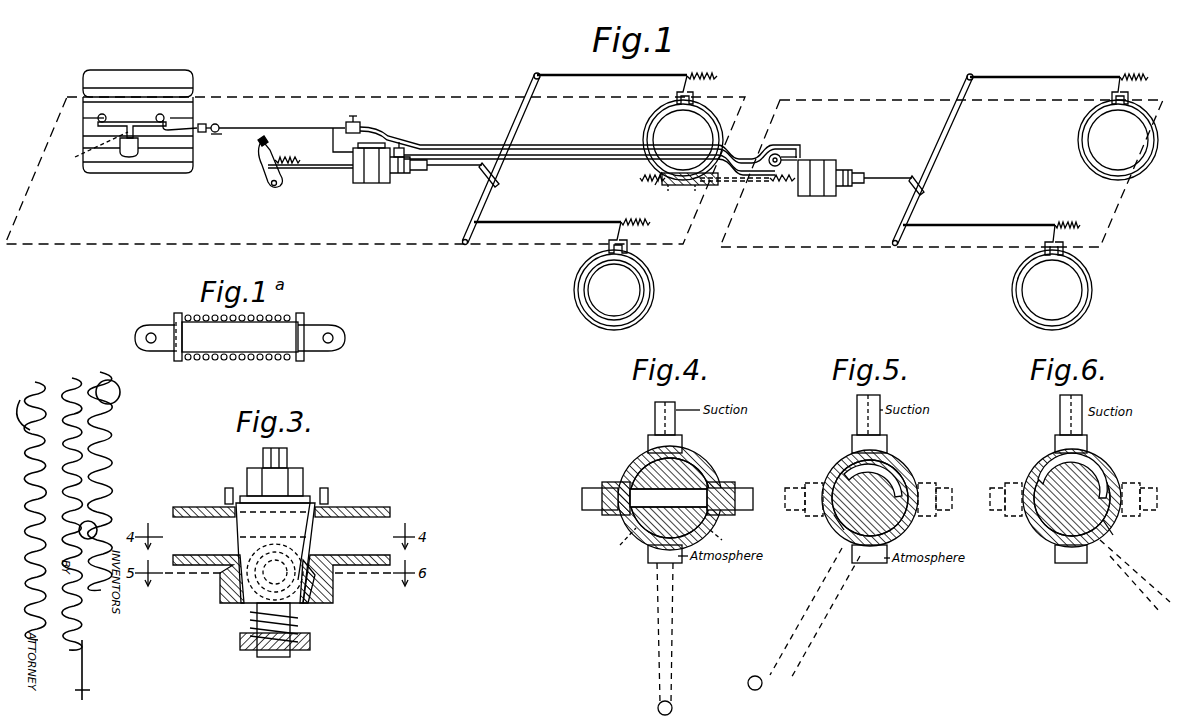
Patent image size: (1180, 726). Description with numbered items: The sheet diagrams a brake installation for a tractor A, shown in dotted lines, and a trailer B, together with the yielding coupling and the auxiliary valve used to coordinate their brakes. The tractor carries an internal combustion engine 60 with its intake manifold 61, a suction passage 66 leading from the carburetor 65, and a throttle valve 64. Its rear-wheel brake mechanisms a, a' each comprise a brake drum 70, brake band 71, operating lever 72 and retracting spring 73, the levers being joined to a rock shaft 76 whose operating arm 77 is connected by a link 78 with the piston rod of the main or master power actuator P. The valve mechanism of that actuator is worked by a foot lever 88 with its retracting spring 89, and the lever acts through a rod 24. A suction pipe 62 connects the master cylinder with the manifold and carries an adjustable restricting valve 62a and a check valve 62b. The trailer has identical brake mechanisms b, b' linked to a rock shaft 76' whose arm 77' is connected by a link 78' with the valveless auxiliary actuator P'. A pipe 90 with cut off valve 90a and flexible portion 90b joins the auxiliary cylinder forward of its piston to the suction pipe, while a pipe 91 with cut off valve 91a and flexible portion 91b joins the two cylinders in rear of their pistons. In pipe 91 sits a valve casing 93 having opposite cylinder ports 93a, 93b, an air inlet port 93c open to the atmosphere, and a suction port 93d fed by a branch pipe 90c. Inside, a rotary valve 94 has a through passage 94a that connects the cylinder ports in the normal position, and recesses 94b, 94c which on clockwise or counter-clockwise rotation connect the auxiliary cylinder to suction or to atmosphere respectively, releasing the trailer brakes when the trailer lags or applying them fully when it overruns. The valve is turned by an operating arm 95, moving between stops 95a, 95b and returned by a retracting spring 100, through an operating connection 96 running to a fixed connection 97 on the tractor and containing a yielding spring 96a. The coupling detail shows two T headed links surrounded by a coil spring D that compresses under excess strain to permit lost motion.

In FIG. 1, the internal combustion engine 60 is at (137, 77).
In FIG. 1, the intake manifold 61 is at (98, 119).
In FIG. 1, the suction passage 66 is at (125, 128).
In FIG. 1, the throttle valve 64 is at (93, 148).
In FIG. 1, the carburetor 65 is at (128, 156).
In FIG. 1, the suction pipe 62 is at (300, 128).
In FIG. 1, the adjustable restricting valve 62a is at (203, 124).
In FIG. 1, the check valve 62b is at (219, 126).
In FIG. 1, the cut off valve 90a is at (360, 124).
In FIG. 1, the pipe 90 is at (580, 145).
In FIG. 1, the flexible portion 90b is at (745, 158).
In FIG. 4, the branch pipe 90c is at (655, 412).
In FIG. 5, the branch pipe 90c is at (857, 412).
In FIG. 6, the branch pipe 90c is at (1060, 412).
In FIG. 1, the main or master power actuator P is at (381, 167).
In FIG. 1, the auxiliary power actuator P' is at (831, 187).
In FIG. 1, the rod 24 is at (300, 169).
In FIG. 1, the foot lever 88 is at (264, 175).
In FIG. 1, the retracting spring 89 is at (287, 150).
In FIG. 1, the pipe 91 is at (567, 159).
In FIG. 4, the pipe 91 is at (585, 500).
In FIG. 1, the cut off valve 91a is at (402, 147).
In FIG. 1, the flexible portion 91b is at (746, 173).
In FIG. 1, the valve casing 93 is at (736, 183).
In FIG. 4, the valve casing 93 is at (690, 462).
In FIG. 5, the valve casing 93 is at (900, 470).
In FIG. 6, the valve casing 93 is at (1100, 470).
In FIG. 3, the cylinder port 93a is at (185, 520).
In FIG. 4, the cylinder port 93a is at (615, 482).
In FIG. 5, the cylinder port 93a is at (812, 483).
In FIG. 6, the cylinder port 93a is at (1018, 516).
In FIG. 3, the cylinder port 93b is at (380, 528).
In FIG. 4, the cylinder port 93b is at (720, 515).
In FIG. 5, the cylinder port 93b is at (938, 488).
In FIG. 6, the cylinder port 93b is at (1132, 483).
In FIG. 4, the air inlet port 93c is at (650, 558).
In FIG. 5, the air inlet port 93c is at (869, 563).
In FIG. 6, the air inlet port 93c is at (1070, 563).
In FIG. 4, the suction port 93d is at (648, 440).
In FIG. 5, the suction port 93d is at (887, 446).
In FIG. 6, the suction port 93d is at (1087, 440).
In FIG. 3, the rotary valve 94 is at (305, 503).
In FIG. 4, the rotary valve 94 is at (640, 515).
In FIG. 5, the rotary valve 94 is at (900, 530).
In FIG. 6, the rotary valve 94 is at (1050, 538).
In FIG. 3, the through passage 94a is at (252, 518).
In FIG. 4, the through passage 94a is at (698, 490).
In FIG. 3, the recess 94b is at (310, 575).
In FIG. 5, the recess 94b is at (902, 482).
In FIG. 6, the recess 94b is at (1045, 468).
In FIG. 5, the recess 94c is at (832, 525).
In FIG. 6, the recess 94c is at (1113, 526).
In FIG. 1, the operating arm 95 is at (782, 162).
In FIG. 3, the stop 95a is at (226, 490).
In FIG. 4, the stop 95a is at (618, 546).
In FIG. 3, the stop 95b is at (329, 490).
In FIG. 4, the stop 95b is at (722, 540).
In FIG. 5, the stop 95b is at (773, 531).
In FIG. 1, the operating connection 96 is at (672, 172).
In FIG. 1, the spring 96a is at (640, 178).
In FIG. 1, the fixed connection 97 is at (657, 184).
In FIG. 1, the retracting spring 100 is at (778, 182).
In FIG. 1, the rock shaft 76 is at (501, 159).
In FIG. 1, the operating arm 77 is at (478, 186).
In FIG. 1, the link 78 is at (454, 180).
In FIG. 1, the rock shaft 76' is at (933, 160).
In FIG. 1, the arm 77' is at (904, 189).
In FIG. 1, the link 78' is at (888, 167).
In FIG. 1, the brake drum 70 is at (614, 290).
In FIG. 1, the brake band 71 is at (655, 283).
In FIG. 1, the operating lever 72 is at (615, 235).
In FIG. 1, the retracting spring 73 is at (635, 213).
In FIG. 1, the tractor A is at (375, 170).
In FIG. 1, the trailer B is at (941, 173).
In FIG. 1, the brake mechanism a is at (563, 278).
In FIG. 1, the brake mechanism a' is at (683, 128).
In FIG. 1, the brake mechanism b is at (1044, 290).
In FIG. 1, the brake mechanism b' is at (1118, 117).
In FIG. 1A, the coil spring D is at (240, 356).